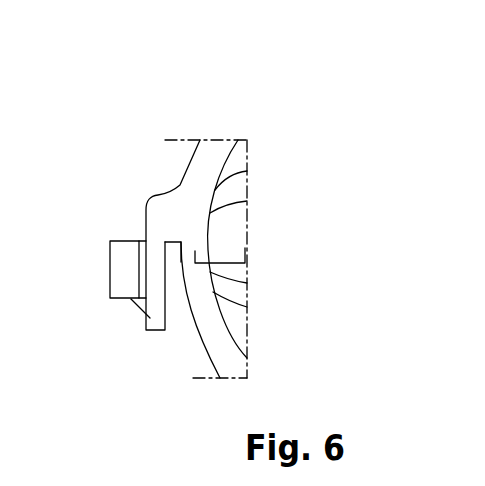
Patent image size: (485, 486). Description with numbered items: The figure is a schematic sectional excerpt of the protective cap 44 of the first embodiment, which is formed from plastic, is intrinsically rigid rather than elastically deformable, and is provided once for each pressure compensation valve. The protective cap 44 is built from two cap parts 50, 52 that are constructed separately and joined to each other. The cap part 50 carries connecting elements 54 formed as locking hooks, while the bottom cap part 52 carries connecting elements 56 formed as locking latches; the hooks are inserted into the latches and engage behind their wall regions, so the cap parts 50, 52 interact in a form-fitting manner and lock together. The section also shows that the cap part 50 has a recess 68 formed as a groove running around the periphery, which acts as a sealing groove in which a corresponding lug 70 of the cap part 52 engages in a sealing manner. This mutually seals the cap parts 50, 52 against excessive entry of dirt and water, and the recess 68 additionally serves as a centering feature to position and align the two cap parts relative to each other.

The protective cap 44 is at (242, 145).
The cap part 50 is at (200, 158).
The cap part 52 is at (198, 321).
The connecting element 54 is at (146, 311).
The connecting element 56 is at (123, 261).
The recess 68 is at (186, 246).
The lug 70 is at (183, 252).